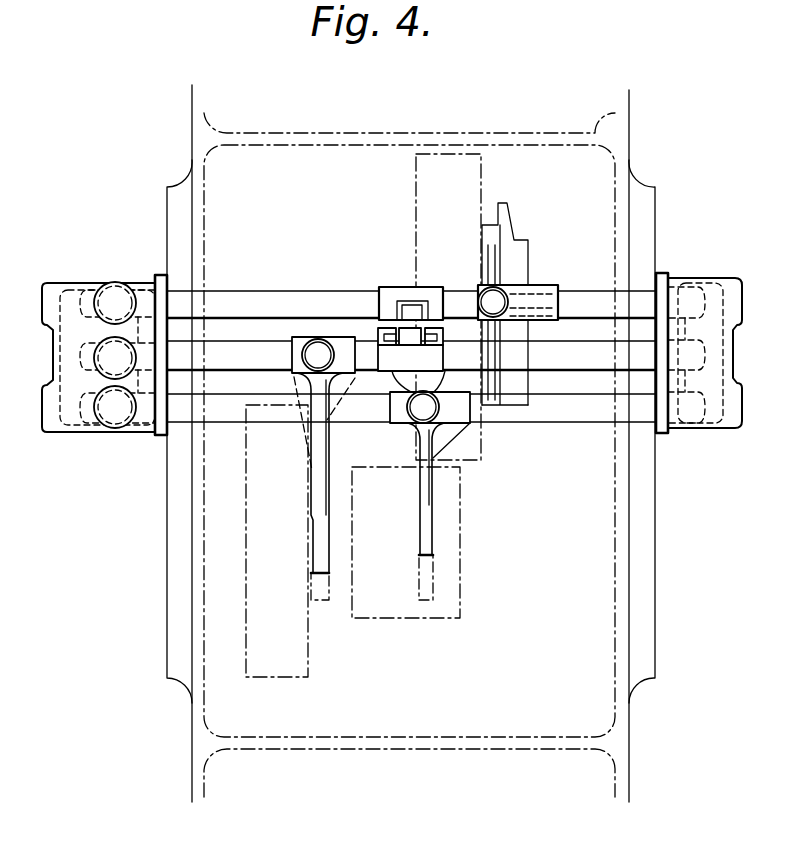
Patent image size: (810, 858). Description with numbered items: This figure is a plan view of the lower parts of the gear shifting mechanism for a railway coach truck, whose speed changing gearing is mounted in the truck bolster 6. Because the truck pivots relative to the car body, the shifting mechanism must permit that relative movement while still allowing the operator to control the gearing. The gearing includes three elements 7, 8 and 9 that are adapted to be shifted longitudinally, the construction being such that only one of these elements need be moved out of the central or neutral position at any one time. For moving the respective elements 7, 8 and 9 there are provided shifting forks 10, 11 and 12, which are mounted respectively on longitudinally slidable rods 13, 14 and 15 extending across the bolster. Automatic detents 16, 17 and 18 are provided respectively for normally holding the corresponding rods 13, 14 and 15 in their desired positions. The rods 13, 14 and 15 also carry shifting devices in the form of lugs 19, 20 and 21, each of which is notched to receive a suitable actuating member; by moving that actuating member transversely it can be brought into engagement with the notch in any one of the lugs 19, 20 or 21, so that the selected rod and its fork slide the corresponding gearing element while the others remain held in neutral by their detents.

The truck bolster 6 is at (631, 161).
The gearing element 7 is at (482, 184).
The gearing element 8 is at (398, 618).
The gearing element 9 is at (269, 677).
The shifting fork 10 is at (490, 236).
The shifting fork 11 is at (428, 510).
The shifting fork 12 is at (322, 535).
The longitudinally slidable rod 13 is at (580, 297).
The longitudinally slidable rod 14 is at (572, 405).
The longitudinally slidable rod 15 is at (599, 334).
The automatic detent 16 is at (115, 302).
The automatic detent 17 is at (115, 406).
The automatic detent 18 is at (115, 357).
The lug 19 is at (406, 302).
The lug 20 is at (408, 375).
The lug 21 is at (384, 333).